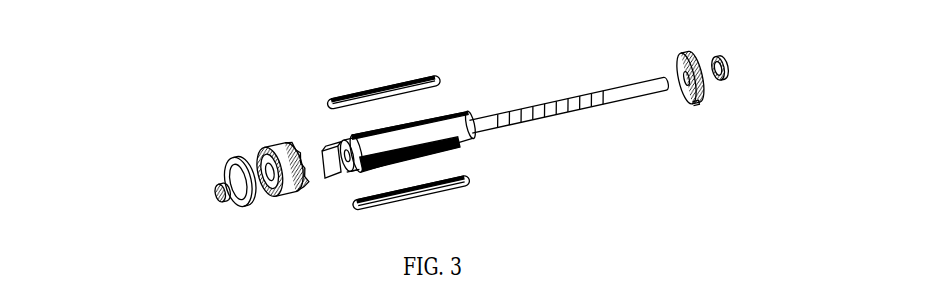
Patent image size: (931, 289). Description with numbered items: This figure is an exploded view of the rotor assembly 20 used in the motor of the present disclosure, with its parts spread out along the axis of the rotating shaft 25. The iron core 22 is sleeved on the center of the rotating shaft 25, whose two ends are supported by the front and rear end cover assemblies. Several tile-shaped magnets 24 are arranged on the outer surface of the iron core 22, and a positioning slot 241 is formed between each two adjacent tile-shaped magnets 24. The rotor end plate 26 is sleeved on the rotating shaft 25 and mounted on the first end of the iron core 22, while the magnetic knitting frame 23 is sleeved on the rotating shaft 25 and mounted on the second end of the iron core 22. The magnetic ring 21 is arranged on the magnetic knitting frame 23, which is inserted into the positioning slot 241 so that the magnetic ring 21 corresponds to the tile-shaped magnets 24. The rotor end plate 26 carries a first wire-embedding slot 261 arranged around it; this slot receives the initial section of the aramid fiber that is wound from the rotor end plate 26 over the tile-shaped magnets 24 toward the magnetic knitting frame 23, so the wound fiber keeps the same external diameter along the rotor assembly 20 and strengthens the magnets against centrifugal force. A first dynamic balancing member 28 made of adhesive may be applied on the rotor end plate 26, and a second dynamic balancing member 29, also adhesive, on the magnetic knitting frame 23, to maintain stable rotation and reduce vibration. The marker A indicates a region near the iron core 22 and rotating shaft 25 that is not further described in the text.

The rotor assembly 20 is at (316, 19).
The magnetic ring 21 is at (237, 162).
The iron core 22 is at (345, 141).
The magnetic knitting frame 23 is at (282, 148).
The tile-shaped magnets 24 is at (453, 127).
The positioning slot 241 is at (377, 114).
The rotating shaft 25 is at (587, 100).
The rotor end plate 26 is at (687, 72).
The first wire-embedding slot 261 is at (694, 112).
The first dynamic balancing member 28 is at (720, 62).
The second dynamic balancing member 29 is at (216, 191).
The detail region A is at (342, 183).